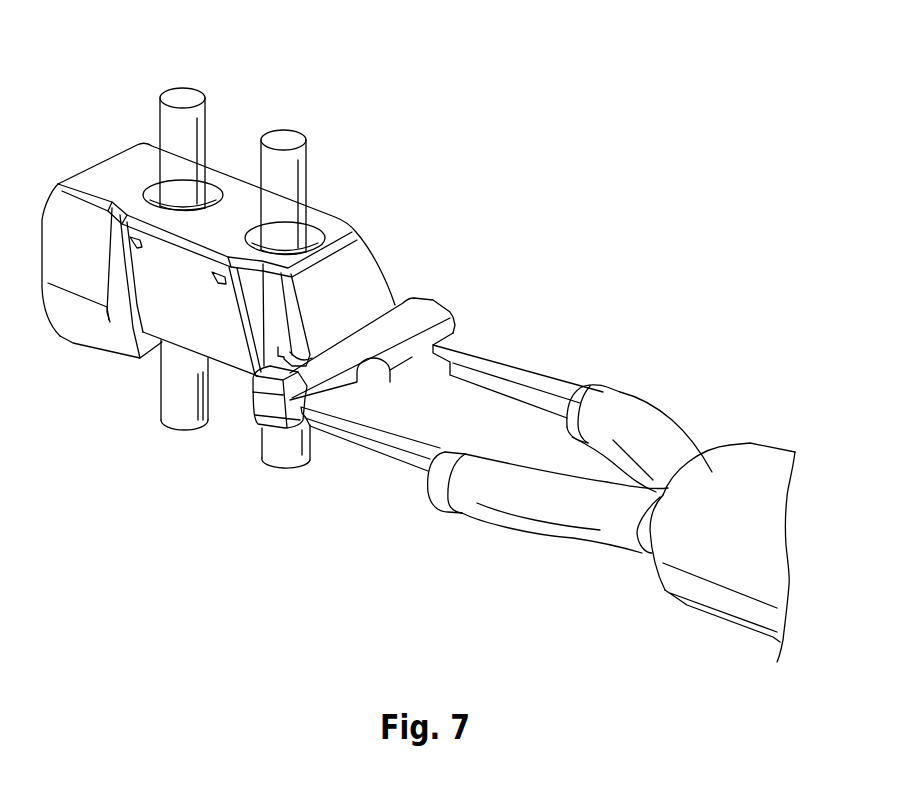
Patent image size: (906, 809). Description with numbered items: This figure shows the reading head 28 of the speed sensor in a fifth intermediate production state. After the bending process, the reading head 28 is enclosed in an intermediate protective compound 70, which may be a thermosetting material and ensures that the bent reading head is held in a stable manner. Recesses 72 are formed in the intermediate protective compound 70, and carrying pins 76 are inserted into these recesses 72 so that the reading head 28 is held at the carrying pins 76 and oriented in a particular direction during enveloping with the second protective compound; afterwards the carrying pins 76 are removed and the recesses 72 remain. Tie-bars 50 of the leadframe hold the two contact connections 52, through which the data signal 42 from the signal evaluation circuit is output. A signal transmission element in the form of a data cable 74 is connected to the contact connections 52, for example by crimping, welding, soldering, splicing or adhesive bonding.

The reading head 28 is at (248, 281).
The carrying pins 76 is at (183, 95).
The recesses 72 is at (214, 186).
The intermediate protective compound 70 is at (90, 330).
The tie-bars 50 is at (218, 285).
The contact connections 52 is at (500, 358).
The data signal 42 is at (533, 451).
The data cable 74 is at (757, 473).